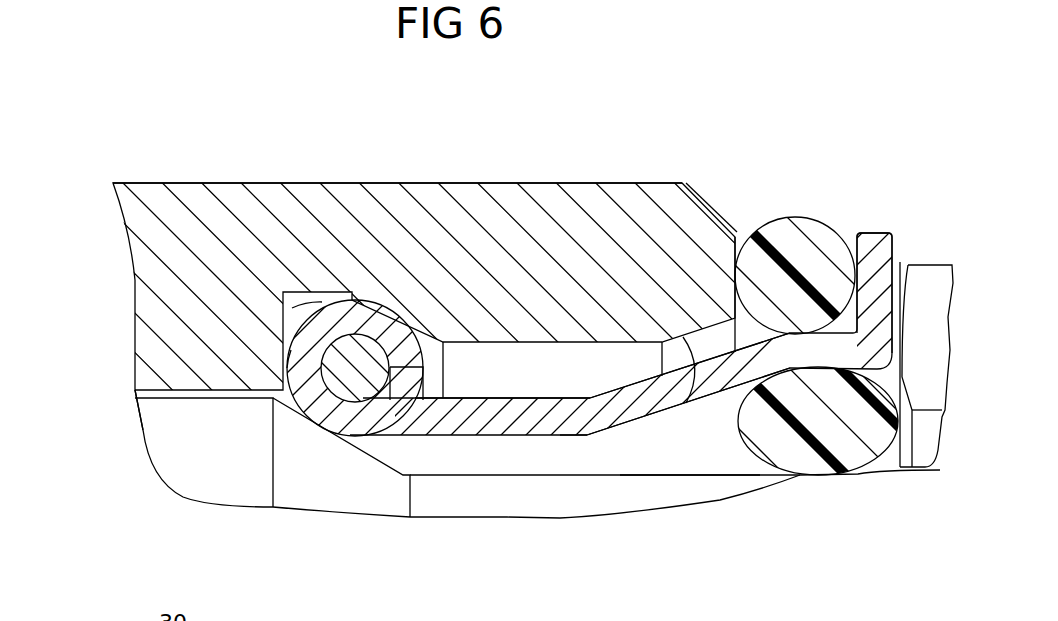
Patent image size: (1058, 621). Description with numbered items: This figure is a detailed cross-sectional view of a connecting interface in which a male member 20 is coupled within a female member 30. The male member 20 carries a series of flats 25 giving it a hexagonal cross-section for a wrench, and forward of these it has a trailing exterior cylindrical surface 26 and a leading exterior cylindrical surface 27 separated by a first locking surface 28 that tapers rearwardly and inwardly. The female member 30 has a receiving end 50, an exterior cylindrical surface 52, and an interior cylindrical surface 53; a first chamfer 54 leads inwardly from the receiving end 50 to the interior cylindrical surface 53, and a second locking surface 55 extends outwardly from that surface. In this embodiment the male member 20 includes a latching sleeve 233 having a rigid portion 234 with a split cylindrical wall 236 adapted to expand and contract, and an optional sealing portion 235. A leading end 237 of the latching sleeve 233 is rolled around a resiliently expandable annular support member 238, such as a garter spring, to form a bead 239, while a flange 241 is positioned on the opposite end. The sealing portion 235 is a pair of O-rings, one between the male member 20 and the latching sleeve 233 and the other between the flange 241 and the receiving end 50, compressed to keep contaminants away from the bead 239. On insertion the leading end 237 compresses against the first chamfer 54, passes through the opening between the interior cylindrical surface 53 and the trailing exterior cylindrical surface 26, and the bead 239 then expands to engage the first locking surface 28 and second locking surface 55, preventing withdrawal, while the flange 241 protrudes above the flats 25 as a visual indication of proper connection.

The male member 20 is at (155, 490).
The flats 25 is at (940, 360).
The trailing exterior cylindrical surface 26 is at (663, 503).
The leading exterior cylindrical surface 27 is at (245, 470).
The first locking surface 28 is at (337, 484).
The female member 30 is at (225, 182).
The receiving end 50 is at (735, 238).
The exterior cylindrical surface 52 is at (370, 183).
The interior cylindrical surface 53 is at (523, 345).
The first chamfer 54 is at (688, 385).
The second locking surface 55 is at (425, 375).
The latching sleeve 233 is at (683, 443).
The rigid portion 234 is at (563, 437).
The sealing portion 235 is at (795, 217).
The split cylindrical wall 236 is at (545, 420).
The leading end 237 is at (292, 307).
The annular support member 238 is at (350, 375).
The bead 239 is at (283, 366).
The flange 241 is at (875, 248).